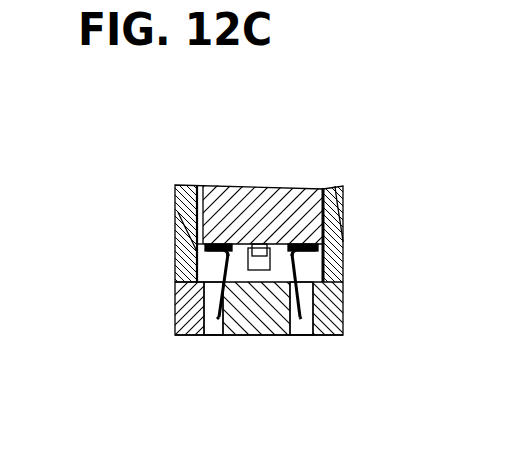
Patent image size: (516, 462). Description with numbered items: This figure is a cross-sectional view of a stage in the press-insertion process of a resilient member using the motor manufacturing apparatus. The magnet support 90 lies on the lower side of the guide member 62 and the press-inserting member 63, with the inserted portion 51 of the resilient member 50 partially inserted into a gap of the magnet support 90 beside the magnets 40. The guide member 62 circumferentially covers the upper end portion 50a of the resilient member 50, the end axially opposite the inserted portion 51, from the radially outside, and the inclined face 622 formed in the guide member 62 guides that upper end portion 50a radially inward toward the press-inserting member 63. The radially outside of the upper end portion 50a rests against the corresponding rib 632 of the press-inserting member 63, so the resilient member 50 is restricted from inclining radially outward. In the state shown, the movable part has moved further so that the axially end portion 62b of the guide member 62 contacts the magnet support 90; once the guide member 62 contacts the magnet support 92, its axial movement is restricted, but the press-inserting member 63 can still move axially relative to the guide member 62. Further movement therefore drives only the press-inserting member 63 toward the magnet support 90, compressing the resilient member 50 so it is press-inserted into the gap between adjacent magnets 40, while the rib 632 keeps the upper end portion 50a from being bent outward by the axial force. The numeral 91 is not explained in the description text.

The press-inserting member 63 is at (233, 187).
The guide member 62 is at (197, 250).
The axially end portion 62b is at (302, 307).
The inclined face 622 is at (210, 252).
The rib 632 is at (207, 246).
The upper end portion 50a is at (178, 205).
The resilient member 50 is at (197, 291).
The inserted portion 51 is at (200, 302).
The socket body 91 is at (200, 310).
The magnet support 92 is at (273, 337).
The magnet support 90 is at (246, 358).
The magnet 40 is at (214, 334).